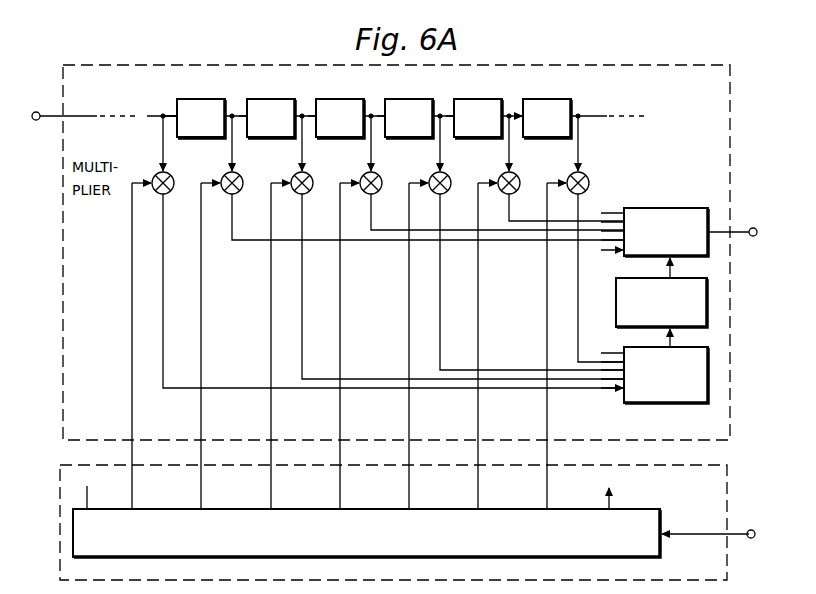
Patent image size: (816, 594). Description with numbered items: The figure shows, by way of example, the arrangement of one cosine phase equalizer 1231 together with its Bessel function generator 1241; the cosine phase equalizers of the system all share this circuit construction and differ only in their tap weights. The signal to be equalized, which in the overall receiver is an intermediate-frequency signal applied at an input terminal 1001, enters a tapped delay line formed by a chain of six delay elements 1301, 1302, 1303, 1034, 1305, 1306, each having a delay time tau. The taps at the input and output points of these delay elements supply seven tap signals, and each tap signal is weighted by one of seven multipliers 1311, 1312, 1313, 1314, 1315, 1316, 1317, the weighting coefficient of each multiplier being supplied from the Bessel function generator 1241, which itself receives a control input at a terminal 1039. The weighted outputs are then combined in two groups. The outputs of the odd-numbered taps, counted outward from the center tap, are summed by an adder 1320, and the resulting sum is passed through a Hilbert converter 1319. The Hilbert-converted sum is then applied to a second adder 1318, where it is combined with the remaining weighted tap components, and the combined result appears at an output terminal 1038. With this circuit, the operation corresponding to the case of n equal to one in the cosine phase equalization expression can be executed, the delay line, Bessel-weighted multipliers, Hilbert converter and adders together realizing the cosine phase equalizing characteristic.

The input terminal 1001 is at (37, 108).
The cosine phase equalizer 1231 is at (667, 65).
The delay element 1301 is at (181, 99).
The delay element 1302 is at (253, 99).
The delay element 1303 is at (327, 99).
The delay line 1034 is at (397, 99).
The delay element 1305 is at (467, 99).
The delay element 1306 is at (537, 99).
The multiplier 1311 is at (176, 173).
The multiplier 1312 is at (245, 173).
The multiplier 1313 is at (314, 173).
The multiplier 1314 is at (383, 173).
The multiplier 1315 is at (452, 173).
The multiplier 1316 is at (521, 173).
The multiplier 1317 is at (590, 173).
The adder 1318 is at (667, 206).
The output terminal 1038 is at (752, 226).
The Hilbert converter 1319 is at (708, 290).
The adder 1320 is at (690, 404).
The Bessel function generator 1241 is at (643, 508).
The input terminal 1039 is at (752, 530).